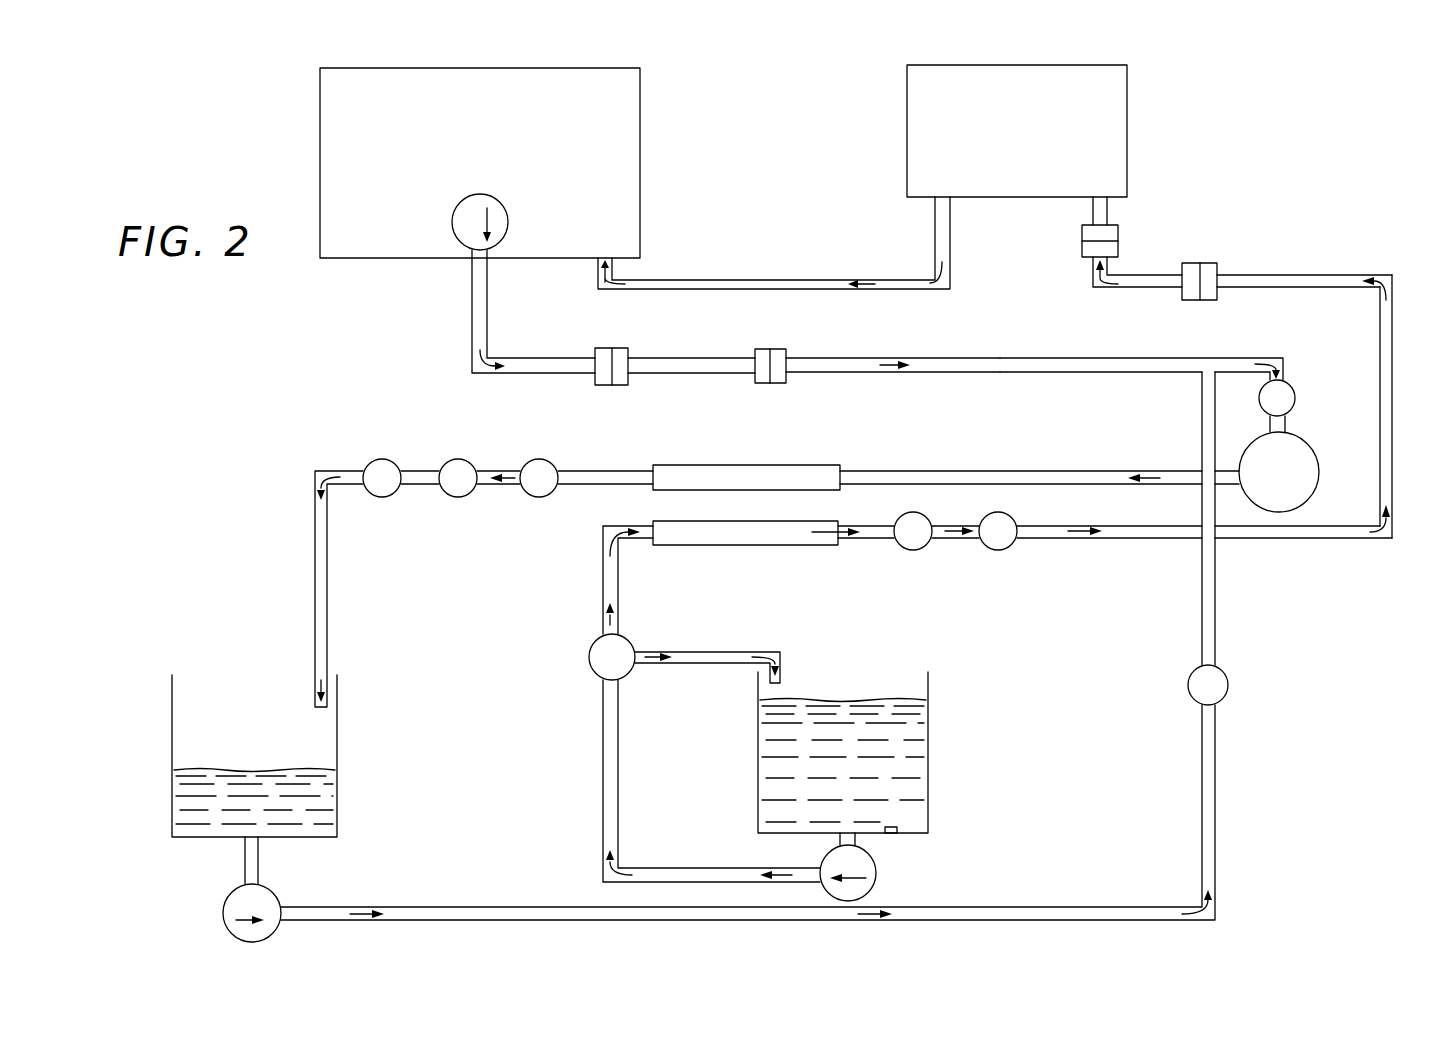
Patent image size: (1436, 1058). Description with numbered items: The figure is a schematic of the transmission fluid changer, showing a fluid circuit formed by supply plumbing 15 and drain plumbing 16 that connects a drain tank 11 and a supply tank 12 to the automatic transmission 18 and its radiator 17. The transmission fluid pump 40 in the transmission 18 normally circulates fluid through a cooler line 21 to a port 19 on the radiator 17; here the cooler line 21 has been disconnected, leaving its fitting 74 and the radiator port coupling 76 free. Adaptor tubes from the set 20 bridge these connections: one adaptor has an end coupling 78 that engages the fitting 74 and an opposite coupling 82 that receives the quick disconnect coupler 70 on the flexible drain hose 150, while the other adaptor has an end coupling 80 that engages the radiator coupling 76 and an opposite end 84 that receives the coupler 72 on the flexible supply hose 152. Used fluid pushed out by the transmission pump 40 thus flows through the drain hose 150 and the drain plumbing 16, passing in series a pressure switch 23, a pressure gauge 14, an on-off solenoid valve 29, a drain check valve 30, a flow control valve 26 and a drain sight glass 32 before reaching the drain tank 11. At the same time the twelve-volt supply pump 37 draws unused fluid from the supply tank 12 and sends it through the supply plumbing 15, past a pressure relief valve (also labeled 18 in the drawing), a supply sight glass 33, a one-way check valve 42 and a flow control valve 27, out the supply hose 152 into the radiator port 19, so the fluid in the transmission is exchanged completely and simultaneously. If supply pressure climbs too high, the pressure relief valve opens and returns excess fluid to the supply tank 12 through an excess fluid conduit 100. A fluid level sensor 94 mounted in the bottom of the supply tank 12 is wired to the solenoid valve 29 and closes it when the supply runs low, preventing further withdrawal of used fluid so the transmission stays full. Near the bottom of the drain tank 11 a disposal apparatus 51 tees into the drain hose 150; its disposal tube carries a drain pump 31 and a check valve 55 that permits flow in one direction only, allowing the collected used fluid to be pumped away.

The drain tank 11 is at (337, 790).
The supply tank 12 is at (928, 775).
The pressure gauge 14 is at (1315, 449).
The supply plumbing 15 is at (1390, 378).
The drain plumbing 16 is at (995, 361).
The radiator 17 is at (1127, 144).
The transmission 18 is at (640, 184).
The radiator port 19 is at (1107, 212).
The adaptor tube 20 is at (709, 362).
The cooler line 21 is at (537, 358).
The pressure switch 23 is at (1295, 395).
The flow control valve 26 is at (546, 459).
The flow control valve 27 is at (1003, 549).
The on-off solenoid valve 29 is at (381, 459).
The drain check valve 30 is at (458, 459).
The drain pump 31 is at (228, 903).
The drain sight glass 32 is at (781, 465).
The supply sight glass 33 is at (775, 545).
The supply pump 37 is at (876, 874).
The transmission fluid pump 40 is at (507, 214).
The second one way check valve 42 is at (916, 550).
The disposal apparatus 51 is at (1080, 908).
The check valve 55 is at (1228, 682).
The quick disconnect coupler 70 is at (778, 353).
The quick disconnect coupler 72 is at (1210, 268).
The coupling 74 is at (600, 348).
The coupling 76 is at (1082, 232).
The end coupling 78 is at (622, 348).
The end coupling 80 is at (1082, 251).
The coupling 82 is at (762, 349).
The opposite end coupling 84 is at (1190, 263).
The fluid level sensor 94 is at (898, 833).
The excess fluid conduit 100 is at (728, 652).
The drain hose 150 is at (918, 358).
The supply hose 152 is at (1316, 273).